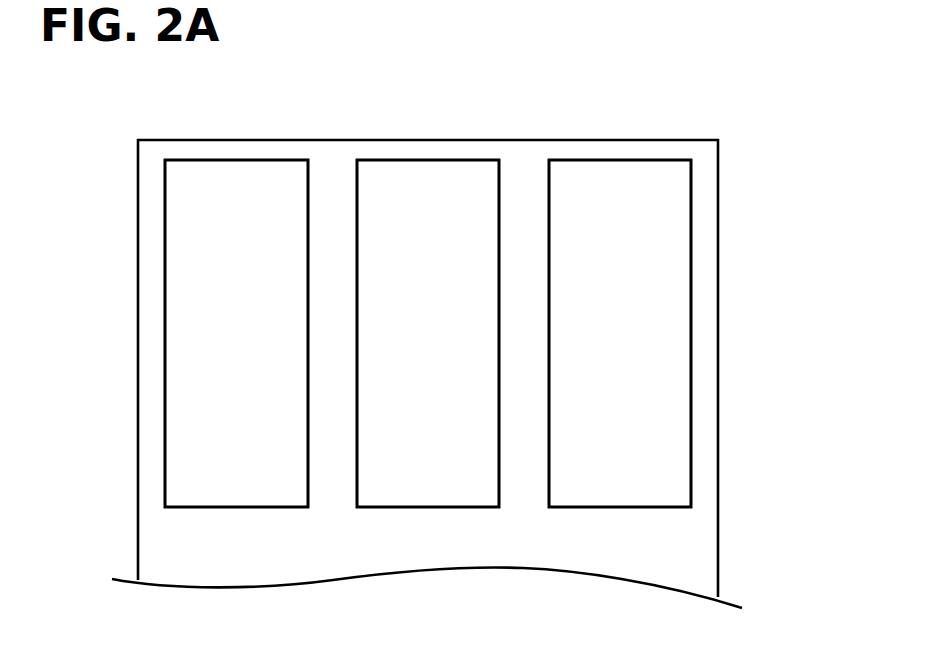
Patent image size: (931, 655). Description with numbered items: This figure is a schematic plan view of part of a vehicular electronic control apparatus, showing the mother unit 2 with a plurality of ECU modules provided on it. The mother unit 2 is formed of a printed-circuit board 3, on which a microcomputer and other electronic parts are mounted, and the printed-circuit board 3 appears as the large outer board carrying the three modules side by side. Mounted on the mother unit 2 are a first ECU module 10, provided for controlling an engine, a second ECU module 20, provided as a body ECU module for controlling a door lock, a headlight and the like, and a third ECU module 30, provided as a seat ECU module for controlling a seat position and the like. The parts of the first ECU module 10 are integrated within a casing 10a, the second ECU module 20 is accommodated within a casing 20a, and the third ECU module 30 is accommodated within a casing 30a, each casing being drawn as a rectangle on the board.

The mother unit 2 is at (681, 138).
The printed-circuit board 3 is at (703, 556).
The first ECU module 10 is at (198, 158).
The casing 10a is at (272, 187).
The second ECU module 20 is at (398, 158).
The casing 20a is at (452, 187).
The third ECU module 30 is at (585, 158).
The casing 30a is at (610, 187).